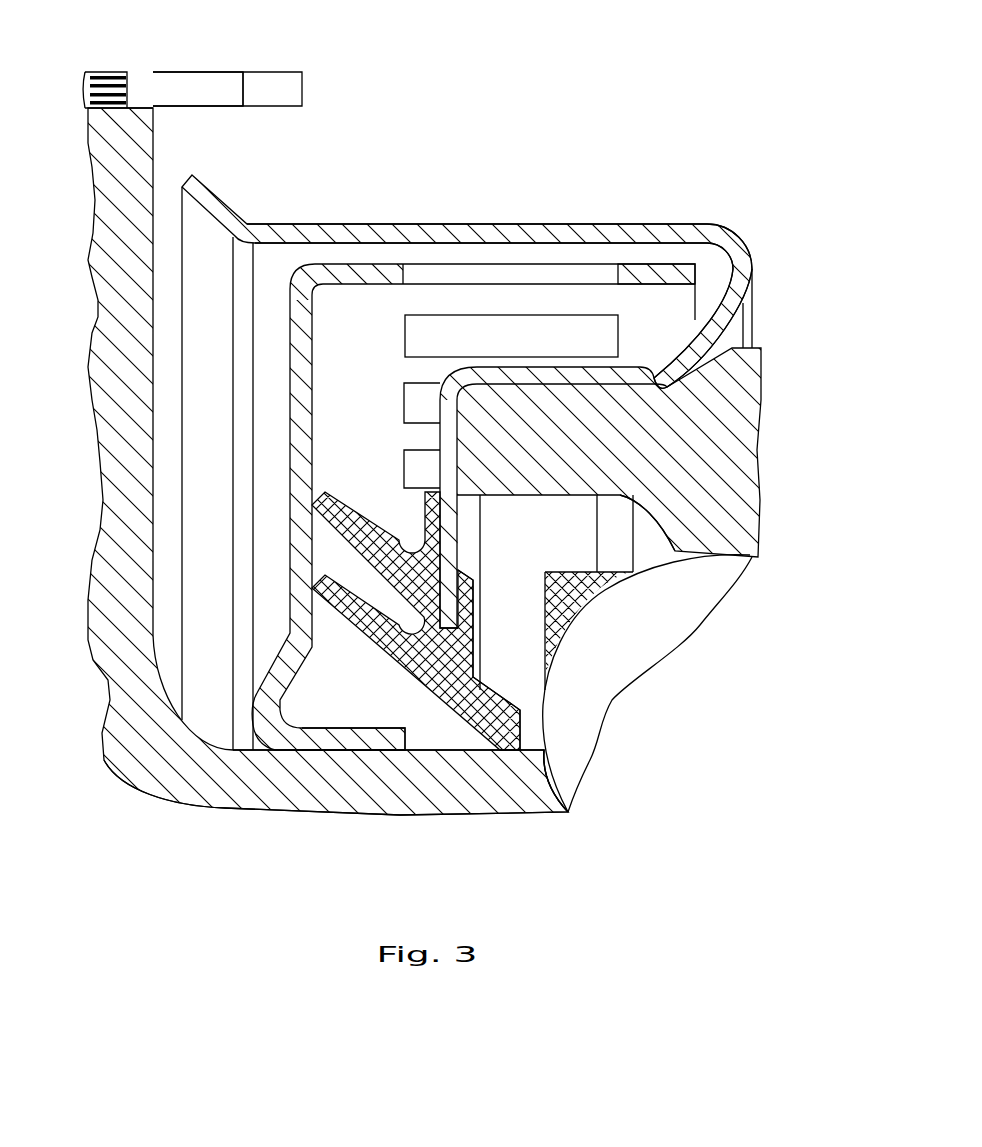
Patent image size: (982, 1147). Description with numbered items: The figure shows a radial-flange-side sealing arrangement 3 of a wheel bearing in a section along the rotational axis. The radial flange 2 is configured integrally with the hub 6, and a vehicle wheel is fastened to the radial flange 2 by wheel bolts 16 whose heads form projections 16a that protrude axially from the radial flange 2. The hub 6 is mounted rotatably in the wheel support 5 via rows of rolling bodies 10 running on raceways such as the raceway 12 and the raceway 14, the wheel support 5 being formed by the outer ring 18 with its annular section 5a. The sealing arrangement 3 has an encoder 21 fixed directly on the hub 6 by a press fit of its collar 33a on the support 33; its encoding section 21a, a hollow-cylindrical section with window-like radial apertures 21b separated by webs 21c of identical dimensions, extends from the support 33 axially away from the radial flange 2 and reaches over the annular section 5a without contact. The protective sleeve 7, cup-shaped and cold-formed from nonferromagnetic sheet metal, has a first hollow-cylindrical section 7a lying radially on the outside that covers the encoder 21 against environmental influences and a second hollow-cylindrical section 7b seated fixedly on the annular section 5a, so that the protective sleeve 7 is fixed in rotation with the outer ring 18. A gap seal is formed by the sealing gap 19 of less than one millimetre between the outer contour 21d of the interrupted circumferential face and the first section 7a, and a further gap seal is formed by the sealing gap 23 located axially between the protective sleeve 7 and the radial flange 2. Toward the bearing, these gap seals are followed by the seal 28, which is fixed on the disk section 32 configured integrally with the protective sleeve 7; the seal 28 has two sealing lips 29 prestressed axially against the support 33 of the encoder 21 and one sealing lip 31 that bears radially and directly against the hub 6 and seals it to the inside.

The radial flange 2 is at (491, 500).
The sealing arrangement 3 is at (622, 170).
The wheel support 5 is at (664, 539).
The annular section 5a is at (553, 483).
The hub 6 is at (415, 800).
The protective sleeve 7 is at (480, 450).
The first hollow-cylindrical section 7a is at (330, 232).
The second hollow-cylindrical section 7b is at (640, 365).
The rolling bodies 10 is at (475, 657).
The raceway 12 is at (563, 777).
The raceway 14 is at (727, 555).
The wheel bolts 16 is at (193, 58).
The projections 16a is at (197, 98).
The outer ring 18 is at (576, 518).
The sealing gap 19 is at (443, 255).
The encoder 21 is at (425, 529).
The encoding section 21a is at (378, 275).
The radial apertures 21b is at (478, 273).
The webs 21c is at (422, 378).
The outer contour 21d is at (655, 262).
The sealing gap 23 is at (168, 217).
The seal 28 is at (444, 647).
The sealing lips 29 is at (443, 655).
The sealing lip 31 is at (512, 755).
The disk section 32 is at (447, 550).
The support 33 is at (297, 397).
The collar 33a is at (363, 743).